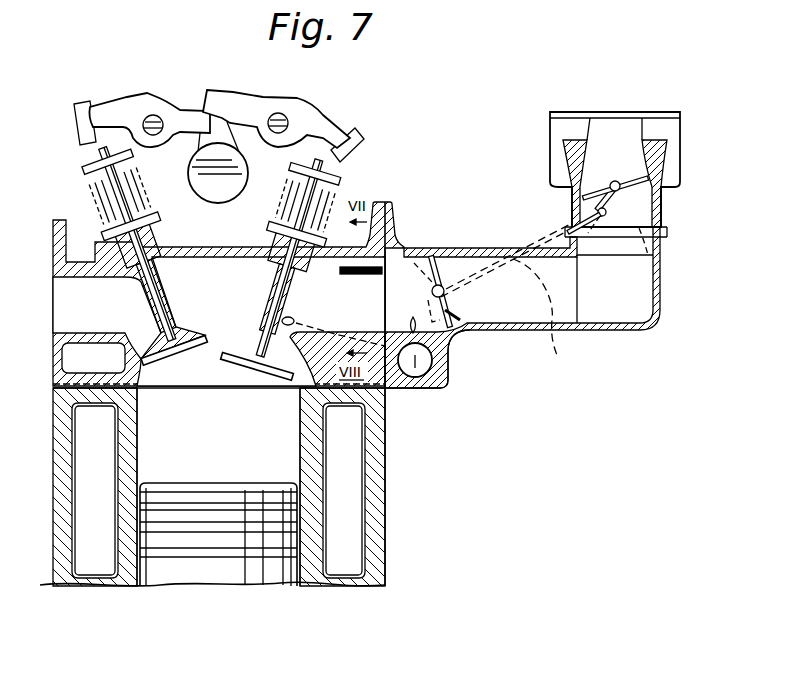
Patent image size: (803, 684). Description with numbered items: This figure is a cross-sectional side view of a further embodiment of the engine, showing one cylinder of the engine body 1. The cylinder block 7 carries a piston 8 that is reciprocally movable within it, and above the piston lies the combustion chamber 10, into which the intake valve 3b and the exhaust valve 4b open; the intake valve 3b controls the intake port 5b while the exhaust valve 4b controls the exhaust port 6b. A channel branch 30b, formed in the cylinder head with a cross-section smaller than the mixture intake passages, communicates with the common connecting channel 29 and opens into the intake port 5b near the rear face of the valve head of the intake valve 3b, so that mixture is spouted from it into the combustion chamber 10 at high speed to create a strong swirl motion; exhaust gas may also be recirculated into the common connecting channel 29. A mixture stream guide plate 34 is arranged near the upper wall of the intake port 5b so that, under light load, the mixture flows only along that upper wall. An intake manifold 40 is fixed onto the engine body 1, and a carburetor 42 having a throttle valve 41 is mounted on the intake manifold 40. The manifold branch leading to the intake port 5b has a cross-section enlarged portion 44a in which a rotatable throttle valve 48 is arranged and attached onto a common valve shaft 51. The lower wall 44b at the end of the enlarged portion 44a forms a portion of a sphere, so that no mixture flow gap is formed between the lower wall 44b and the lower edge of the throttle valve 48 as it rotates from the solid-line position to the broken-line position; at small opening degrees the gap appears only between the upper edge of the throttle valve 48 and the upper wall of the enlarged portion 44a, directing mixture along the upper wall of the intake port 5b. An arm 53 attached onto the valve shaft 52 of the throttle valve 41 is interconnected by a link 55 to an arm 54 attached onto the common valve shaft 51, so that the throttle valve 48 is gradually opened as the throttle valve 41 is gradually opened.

The engine body 1 is at (392, 502).
The intake valve 3b is at (272, 268).
The exhaust valve 4b is at (182, 242).
The intake port 5b is at (333, 298).
The exhaust port 6b is at (106, 315).
The cylinder block 7 is at (326, 557).
The piston 8 is at (229, 567).
The combustion chamber 10 is at (231, 420).
The common connecting channel 29 is at (415, 368).
The channel branch 30b is at (298, 390).
The mixture stream guide plate 34 is at (358, 276).
The intake manifold 40 is at (596, 340).
The throttle valve 41 is at (663, 203).
The carburetor 42 is at (655, 138).
The cross-section enlarged portion 44a is at (452, 348).
The lower wall 44b is at (457, 334).
The rotatable throttle valve 48 is at (437, 270).
The common valve shaft 51 is at (467, 292).
The valve shaft 52 is at (616, 180).
The arm 53 is at (650, 257).
The arm 54 is at (410, 258).
The link 55 is at (545, 322).